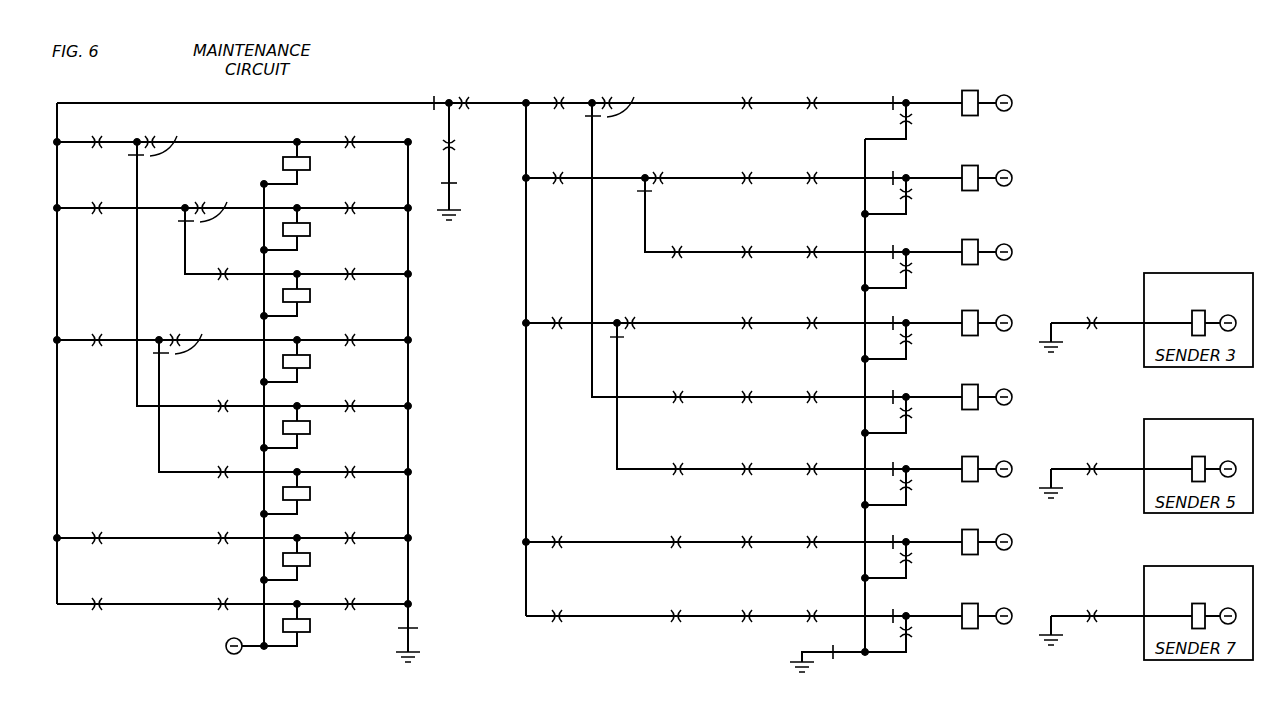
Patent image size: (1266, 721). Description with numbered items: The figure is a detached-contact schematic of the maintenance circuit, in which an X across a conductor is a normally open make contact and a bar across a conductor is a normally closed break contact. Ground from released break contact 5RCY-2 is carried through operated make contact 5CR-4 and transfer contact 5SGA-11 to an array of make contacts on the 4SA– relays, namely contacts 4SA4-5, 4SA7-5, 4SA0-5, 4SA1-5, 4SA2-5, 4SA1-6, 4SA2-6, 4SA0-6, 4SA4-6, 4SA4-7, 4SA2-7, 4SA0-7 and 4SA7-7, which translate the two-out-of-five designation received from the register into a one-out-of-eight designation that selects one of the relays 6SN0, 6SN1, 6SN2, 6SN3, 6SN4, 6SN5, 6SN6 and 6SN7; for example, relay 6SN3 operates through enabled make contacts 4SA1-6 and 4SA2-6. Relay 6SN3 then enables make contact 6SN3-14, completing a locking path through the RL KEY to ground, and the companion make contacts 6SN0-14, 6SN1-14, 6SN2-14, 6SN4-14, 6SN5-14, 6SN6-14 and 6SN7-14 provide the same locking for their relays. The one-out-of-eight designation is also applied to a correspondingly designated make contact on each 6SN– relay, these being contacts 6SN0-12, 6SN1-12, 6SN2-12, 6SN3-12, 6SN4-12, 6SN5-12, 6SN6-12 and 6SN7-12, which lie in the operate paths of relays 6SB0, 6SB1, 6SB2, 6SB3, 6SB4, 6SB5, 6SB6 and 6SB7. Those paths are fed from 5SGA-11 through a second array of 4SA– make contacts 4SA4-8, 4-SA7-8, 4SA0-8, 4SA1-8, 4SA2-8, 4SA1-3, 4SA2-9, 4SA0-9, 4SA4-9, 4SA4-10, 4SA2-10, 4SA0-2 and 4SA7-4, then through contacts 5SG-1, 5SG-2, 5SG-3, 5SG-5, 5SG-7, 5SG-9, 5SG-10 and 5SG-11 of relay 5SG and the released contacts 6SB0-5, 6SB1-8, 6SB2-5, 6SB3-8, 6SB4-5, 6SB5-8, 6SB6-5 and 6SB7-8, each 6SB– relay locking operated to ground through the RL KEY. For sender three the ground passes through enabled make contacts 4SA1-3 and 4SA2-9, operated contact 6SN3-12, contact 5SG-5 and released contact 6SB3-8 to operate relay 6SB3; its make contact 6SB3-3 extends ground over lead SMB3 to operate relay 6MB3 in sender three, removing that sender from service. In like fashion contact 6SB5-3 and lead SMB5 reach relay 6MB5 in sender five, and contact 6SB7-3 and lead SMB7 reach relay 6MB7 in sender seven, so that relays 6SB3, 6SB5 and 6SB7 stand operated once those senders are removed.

The contact 4SA4-5 is at (95, 133).
The contact 4SA7-5 is at (172, 137).
The contact 6SN0-14 is at (366, 133).
The relay 6SN0 is at (321, 164).
The contact 4SA0-5 is at (95, 199).
The contact 4SA1-5 is at (194, 203).
The contact 6SN1-14 is at (357, 199).
The relay 6SN1 is at (321, 230).
The contact 4SA2-5 is at (220, 265).
The contact 6SN2-14 is at (357, 265).
The relay 6SN2 is at (321, 296).
The make contact 4SA1-6 is at (95, 331).
The make contact 4SA2-6 is at (176, 335).
The make contact 6SN3-14 is at (357, 331).
The relay 6SN3 is at (321, 362).
The contact 4SA0-6 is at (218, 397).
The contact 6SN4-14 is at (357, 397).
The relay 6SN4 is at (321, 428).
The contact 4SA4-6 is at (216, 463).
The contact 6SN5-14 is at (356, 463).
The relay 6SN5 is at (320, 494).
The contact 4SA4-7 is at (96, 529).
The contact 4SA2-7 is at (219, 529).
The contact 6SN6-14 is at (349, 529).
The relay 6SN6 is at (320, 560).
The contact 4SA0-7 is at (96, 595).
The contact 4SA7-7 is at (209, 595).
The contact 6SN7-14 is at (352, 595).
The relay 6SN7 is at (321, 626).
The RL key RL KEY is at (643, 648).
The transfer contact 5SGA-11 is at (438, 93).
The make contact 5CR-4 is at (476, 146).
The break contact 5RCY-2 is at (477, 184).
The contact 4SA4-8 is at (551, 93).
The contact 4SA7-8 4-SA7-8 is at (626, 97).
The contact 6SN0-12 is at (746, 93).
The contact 5SG-1 is at (819, 93).
The contact 6SB0-5 is at (898, 102).
The relay 6SB0 is at (983, 94).
The contact 4SA0-8 is at (561, 168).
The contact 4SA1-8 is at (645, 172).
The contact 6SN1-12 is at (746, 168).
The contact 5SG-2 is at (819, 168).
The contact 6SB1-8 is at (898, 177).
The relay 6SB1 is at (982, 169).
The contact 4SA2-8 is at (680, 242).
The contact 6SN2-12 is at (754, 242).
The contact 5SG-3 is at (824, 242).
The contact 6SB2-5 is at (898, 251).
The relay 6SB2 is at (982, 243).
The make contact 4SA1-3 is at (561, 313).
The make contact 4SA2-9 is at (628, 317).
The make contact 6SN3-12 is at (740, 313).
The contact 5SG-5 is at (822, 313).
The break contact 6SB3-8 is at (898, 322).
The relay 6SB3 is at (981, 313).
The contact 4SA0-9 is at (668, 387).
The contact 6SN4-12 is at (751, 387).
The contact 5SG-7 is at (820, 387).
The contact 6SB4-5 is at (898, 396).
The relay 6SB4 is at (981, 387).
The contact 4SA4-9 is at (665, 459).
The contact 6SN5-12 is at (751, 459).
The contact 5SG-9 is at (819, 459).
The contact 6SB5-8 is at (898, 468).
The relay 6SB5 is at (981, 459).
The contact 4SA4-10 is at (567, 532).
The contact 4SA2-10 is at (666, 532).
The contact 6SN6-12 is at (754, 532).
The contact 5SG-10 is at (827, 532).
The contact 6SB6-5 is at (898, 541).
The relay 6SB6 is at (981, 532).
The contact 4SA0-2 is at (561, 606).
The contact 4SA7-4 is at (660, 606).
The contact 6SN7-12 is at (744, 606).
The contact 5SG-11 is at (822, 606).
The contact 6SB7-8 is at (898, 615).
The relay 6SB7 is at (979, 606).
The make contact 6SB3-3 is at (1085, 313).
The lead SMB3 is at (1125, 326).
The relay 6MB3 is at (1203, 313).
The contact 6SB5-3 is at (1085, 460).
The sender 5 lead SMB5 is at (1125, 472).
The sender 5 relay 6MB5 is at (1203, 459).
The contact 6SB7-3 is at (1088, 607).
The sender 7 lead SMB7 is at (1125, 619).
The sender 7 relay 6MB7 is at (1200, 606).